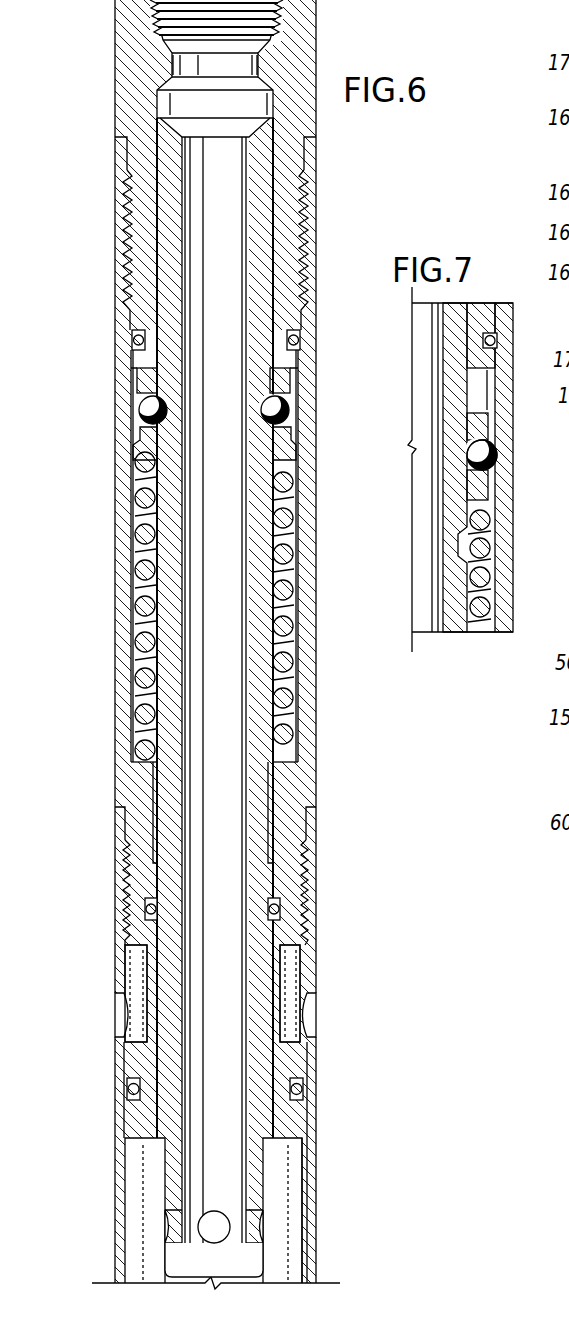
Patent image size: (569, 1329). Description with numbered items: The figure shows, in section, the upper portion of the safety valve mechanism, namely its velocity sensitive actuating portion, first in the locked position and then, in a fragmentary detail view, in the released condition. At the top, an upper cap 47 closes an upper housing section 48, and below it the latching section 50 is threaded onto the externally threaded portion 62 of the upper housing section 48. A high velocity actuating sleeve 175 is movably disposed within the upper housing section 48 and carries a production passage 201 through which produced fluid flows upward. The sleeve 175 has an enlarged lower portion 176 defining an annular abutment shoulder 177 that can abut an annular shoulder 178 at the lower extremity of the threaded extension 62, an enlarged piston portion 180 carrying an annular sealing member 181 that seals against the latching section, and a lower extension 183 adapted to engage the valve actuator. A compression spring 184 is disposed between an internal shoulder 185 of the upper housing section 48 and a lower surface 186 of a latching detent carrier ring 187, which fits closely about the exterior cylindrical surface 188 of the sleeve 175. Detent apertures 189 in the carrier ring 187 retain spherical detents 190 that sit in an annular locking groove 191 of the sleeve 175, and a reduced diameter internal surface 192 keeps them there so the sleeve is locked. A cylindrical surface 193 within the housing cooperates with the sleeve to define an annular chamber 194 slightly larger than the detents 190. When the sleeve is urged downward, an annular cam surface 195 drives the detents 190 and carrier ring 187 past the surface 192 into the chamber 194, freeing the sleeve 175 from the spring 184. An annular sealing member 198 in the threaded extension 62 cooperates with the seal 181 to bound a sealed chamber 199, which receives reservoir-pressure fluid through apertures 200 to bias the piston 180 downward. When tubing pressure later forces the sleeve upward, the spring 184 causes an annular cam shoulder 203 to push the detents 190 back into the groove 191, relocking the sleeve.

In FIG. 6, the upper cap 47 is at (310, 42).
In FIG. 6, the upper housing section 48 is at (309, 663).
In FIG. 7, the upper housing section 48 is at (503, 599).
In FIG. 6, the latching section 50 is at (309, 1167).
In FIG. 6, the externally threaded portion 62 is at (287, 875).
In FIG. 6, the high velocity actuating sleeve 175 is at (260, 789).
In FIG. 6, the enlarged lower portion 176 is at (155, 977).
In FIG. 6, the annular abutment shoulder 177 is at (126, 940).
In FIG. 6, the annular shoulder 178 is at (298, 955).
In FIG. 6, the enlarged piston portion 180 is at (292, 1067).
In FIG. 6, the annular sealing member 181 is at (126, 1088).
In FIG. 6, the lower extension 183 is at (257, 1200).
In FIG. 6, the compression spring 184 is at (288, 590).
In FIG. 7, the compression spring 184 is at (458, 548).
In FIG. 6, the internal shoulder 185 is at (133, 754).
In FIG. 6, the lower surface 186 is at (298, 470).
In FIG. 7, the lower surface 186 is at (497, 493).
In FIG. 6, the latching detent carrier ring 187 is at (291, 381).
In FIG. 7, the latching detent carrier ring 187 is at (489, 423).
In FIG. 6, the exterior cylindrical surface 188 is at (293, 531).
In FIG. 6, the detent apertures 189 is at (290, 426).
In FIG. 6, the spherical detents 190 is at (138, 410).
In FIG. 7, the spherical detents 190 is at (478, 460).
In FIG. 6, the annular locking groove 191 is at (140, 437).
In FIG. 7, the annular locking groove 191 is at (480, 534).
In FIG. 6, the reduced diameter internal surface 192 is at (137, 380).
In FIG. 7, the reduced diameter internal surface 192 is at (489, 383).
In FIG. 7, the cylindrical surface 193 is at (497, 557).
In FIG. 7, the annular chamber 194 is at (500, 633).
In FIG. 6, the annular cam surface 195 is at (262, 412).
In FIG. 6, the annular sealing member 198 is at (277, 908).
In FIG. 6, the sealed chamber 199 is at (292, 985).
In FIG. 6, the apertures 200 is at (305, 1023).
In FIG. 6, the production passage 201 is at (182, 628).
In FIG. 7, the annular cam shoulder 203 is at (495, 452).